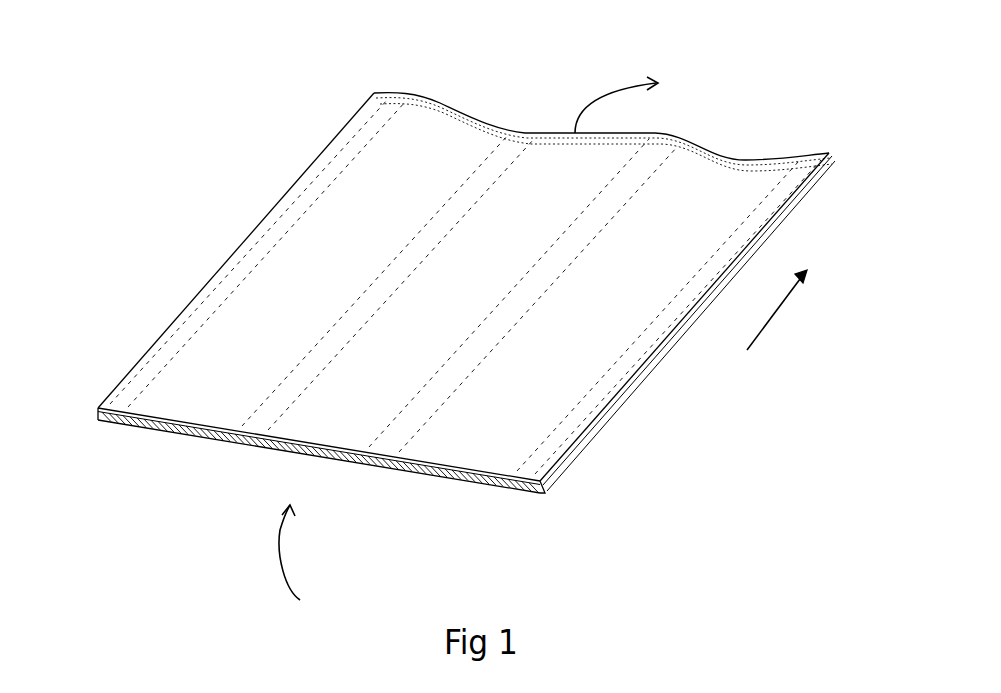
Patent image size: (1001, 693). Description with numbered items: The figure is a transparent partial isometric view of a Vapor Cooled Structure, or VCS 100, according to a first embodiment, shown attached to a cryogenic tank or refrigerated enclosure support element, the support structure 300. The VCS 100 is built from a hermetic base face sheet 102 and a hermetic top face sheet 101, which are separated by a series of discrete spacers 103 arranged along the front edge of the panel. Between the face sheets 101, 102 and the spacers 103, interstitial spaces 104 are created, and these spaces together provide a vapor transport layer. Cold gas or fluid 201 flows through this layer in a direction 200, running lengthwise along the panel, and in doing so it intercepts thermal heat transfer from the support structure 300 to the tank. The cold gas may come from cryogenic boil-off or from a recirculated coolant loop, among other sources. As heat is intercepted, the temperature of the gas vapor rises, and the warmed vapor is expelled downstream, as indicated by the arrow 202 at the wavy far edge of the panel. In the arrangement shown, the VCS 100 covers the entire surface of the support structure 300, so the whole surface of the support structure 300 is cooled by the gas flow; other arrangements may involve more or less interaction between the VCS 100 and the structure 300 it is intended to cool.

The Vapor Cooled Structure 100 is at (188, 132).
The hermetic top face sheet 101 is at (276, 243).
The hermetic base face sheet 102 is at (203, 423).
The discrete spacers 103 is at (103, 421).
The interstitial spaces 104 is at (163, 421).
The direction 200 is at (791, 310).
The cold gas or fluid 201 is at (315, 566).
The arrow 202 is at (651, 100).
The support structure 300 is at (540, 489).